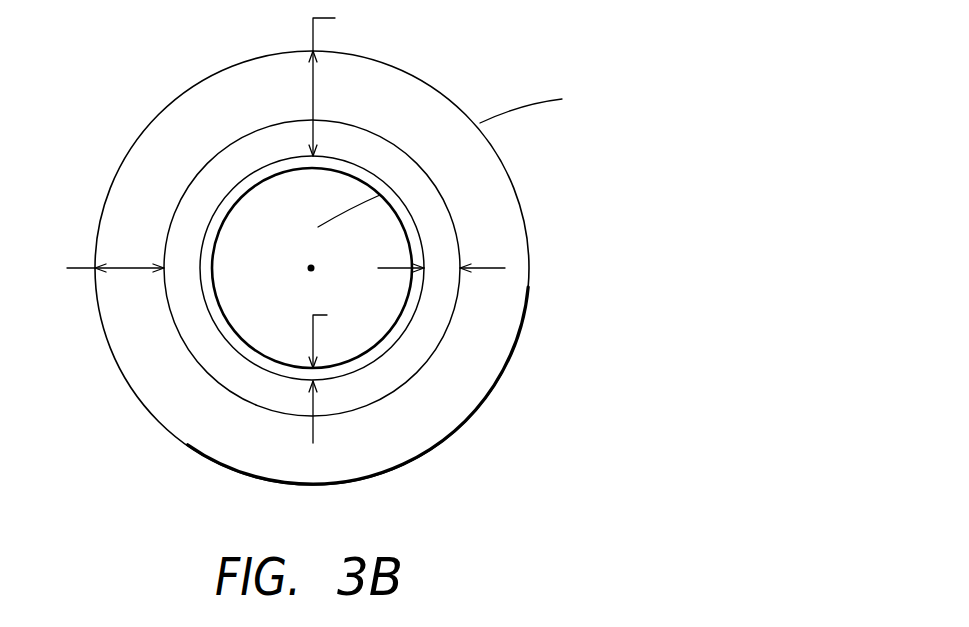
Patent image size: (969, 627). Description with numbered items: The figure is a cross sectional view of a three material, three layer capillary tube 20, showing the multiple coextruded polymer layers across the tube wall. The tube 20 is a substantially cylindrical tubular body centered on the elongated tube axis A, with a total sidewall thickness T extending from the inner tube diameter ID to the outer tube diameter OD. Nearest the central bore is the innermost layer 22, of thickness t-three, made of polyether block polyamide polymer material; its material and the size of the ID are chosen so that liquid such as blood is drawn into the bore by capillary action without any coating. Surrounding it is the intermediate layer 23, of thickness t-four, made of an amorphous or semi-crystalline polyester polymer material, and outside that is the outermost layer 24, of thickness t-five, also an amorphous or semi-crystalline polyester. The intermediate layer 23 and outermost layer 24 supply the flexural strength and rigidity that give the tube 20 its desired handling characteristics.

The three layer capillary tube 20 is at (354, 246).
The innermost layer 22 is at (236, 213).
The intermediate layer 23 is at (414, 353).
The outermost layer 24 is at (500, 338).